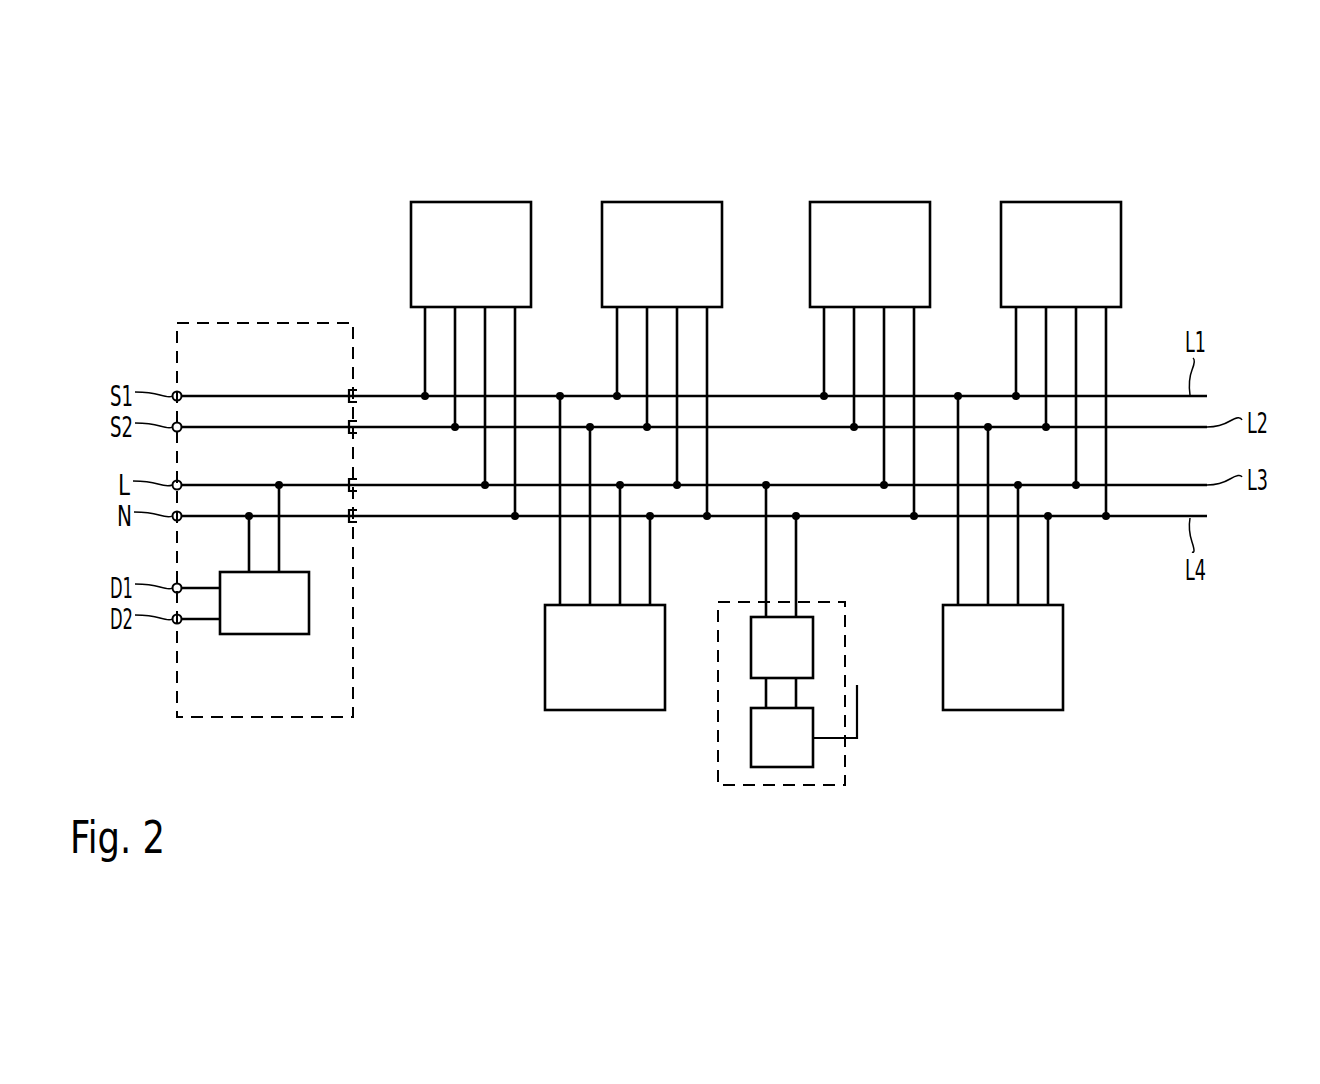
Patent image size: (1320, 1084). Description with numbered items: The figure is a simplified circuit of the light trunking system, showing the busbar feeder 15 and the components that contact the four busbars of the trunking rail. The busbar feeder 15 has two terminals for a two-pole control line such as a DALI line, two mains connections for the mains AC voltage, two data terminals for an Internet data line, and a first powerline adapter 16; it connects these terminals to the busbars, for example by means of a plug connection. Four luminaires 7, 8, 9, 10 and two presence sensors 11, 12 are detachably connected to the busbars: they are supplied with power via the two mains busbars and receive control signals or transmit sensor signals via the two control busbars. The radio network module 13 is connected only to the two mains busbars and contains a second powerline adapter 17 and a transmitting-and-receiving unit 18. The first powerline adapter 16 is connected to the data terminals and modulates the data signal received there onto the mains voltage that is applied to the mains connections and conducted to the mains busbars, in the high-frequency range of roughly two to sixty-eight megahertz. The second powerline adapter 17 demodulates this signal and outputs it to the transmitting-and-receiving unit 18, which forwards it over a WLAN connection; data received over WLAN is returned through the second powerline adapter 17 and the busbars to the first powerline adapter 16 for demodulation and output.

The luminaire 7 is at (470, 202).
The luminaire 8 is at (662, 202).
The luminaire 9 is at (870, 202).
The luminaire 10 is at (1061, 202).
The presence sensor 11 is at (603, 710).
The presence sensor 12 is at (1003, 710).
The radio network module 13 is at (821, 601).
The busbar feeder 15 is at (275, 323).
The first powerline adapter 16 is at (262, 634).
The second powerline adapter 17 is at (813, 647).
The transmitting-and-receiving unit 18 is at (780, 767).